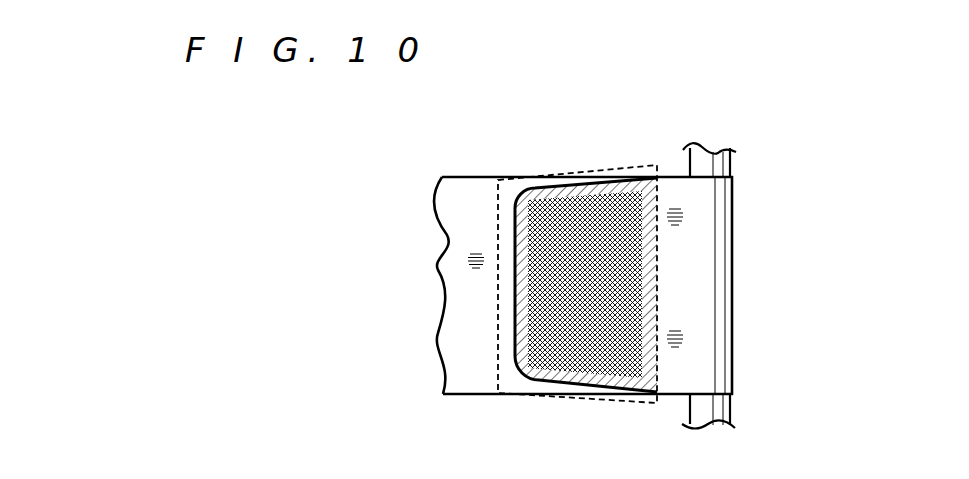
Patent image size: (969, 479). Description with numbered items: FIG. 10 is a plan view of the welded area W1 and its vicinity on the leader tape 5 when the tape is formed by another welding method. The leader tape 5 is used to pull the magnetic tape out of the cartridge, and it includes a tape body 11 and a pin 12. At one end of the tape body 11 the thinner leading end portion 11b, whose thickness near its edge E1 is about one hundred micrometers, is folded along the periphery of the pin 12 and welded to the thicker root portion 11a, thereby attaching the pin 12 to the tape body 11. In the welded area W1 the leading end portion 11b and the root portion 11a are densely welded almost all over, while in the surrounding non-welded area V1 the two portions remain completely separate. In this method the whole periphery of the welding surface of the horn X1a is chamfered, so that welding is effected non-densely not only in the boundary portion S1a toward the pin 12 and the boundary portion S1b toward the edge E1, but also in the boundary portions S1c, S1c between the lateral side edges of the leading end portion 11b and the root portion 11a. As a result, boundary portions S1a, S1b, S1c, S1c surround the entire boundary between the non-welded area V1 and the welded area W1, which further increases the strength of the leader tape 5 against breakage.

The leader tape 5 is at (405, 200).
The tape body 11 is at (472, 297).
The root portion 11a is at (550, 387).
The leading end portion 11b is at (614, 350).
The pin 12 is at (715, 408).
The horn X1a is at (497, 244).
The edge E1 is at (513, 312).
The non-welded area V1 is at (503, 350).
The welded area W1 is at (589, 238).
The boundary portion S1a is at (650, 212).
The boundary portion S1b is at (523, 233).
The boundary portion S1c is at (557, 196).